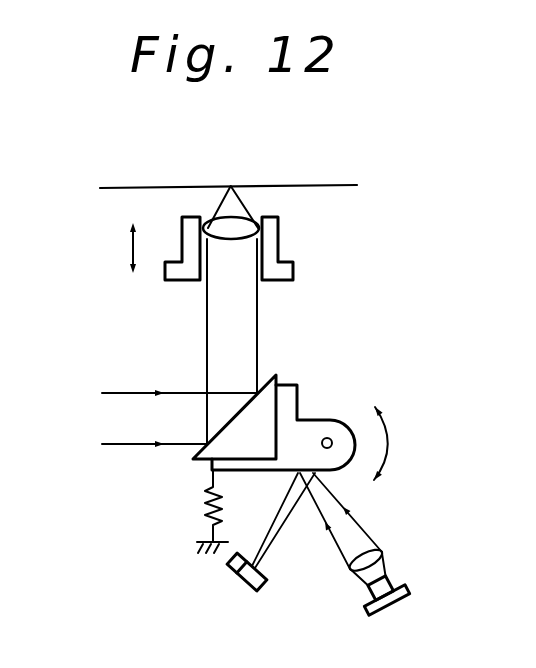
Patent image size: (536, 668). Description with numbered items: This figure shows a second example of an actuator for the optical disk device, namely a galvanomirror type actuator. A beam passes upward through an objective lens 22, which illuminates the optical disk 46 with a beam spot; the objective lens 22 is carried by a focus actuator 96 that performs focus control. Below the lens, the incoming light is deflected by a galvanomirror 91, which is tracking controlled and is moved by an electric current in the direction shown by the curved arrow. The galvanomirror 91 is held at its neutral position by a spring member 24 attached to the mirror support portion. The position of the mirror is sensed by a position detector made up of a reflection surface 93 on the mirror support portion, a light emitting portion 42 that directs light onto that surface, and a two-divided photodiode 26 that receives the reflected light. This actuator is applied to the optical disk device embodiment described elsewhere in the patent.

The optical disk 46 is at (102, 188).
The objective lens 22 is at (284, 238).
The focus actuator 96 is at (290, 270).
The galvanomirror 91 is at (263, 410).
The reflection surface of the mirror support portion 93 is at (255, 473).
The spring member 24 is at (197, 507).
The two-divided photodiode 26 is at (250, 592).
The light emitting portion 42 is at (395, 610).